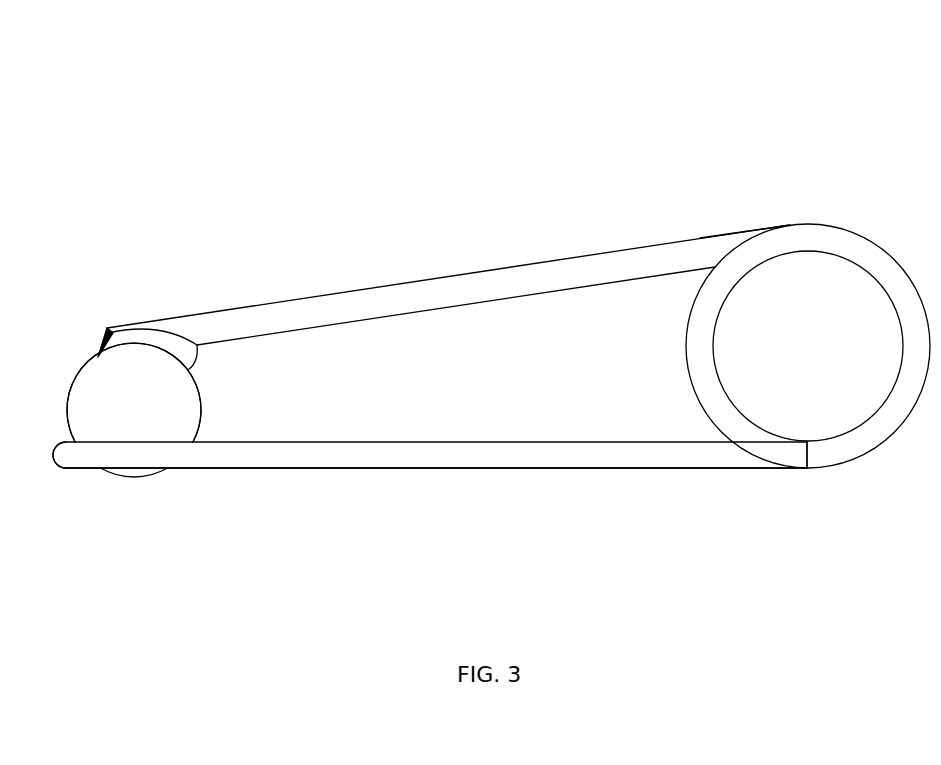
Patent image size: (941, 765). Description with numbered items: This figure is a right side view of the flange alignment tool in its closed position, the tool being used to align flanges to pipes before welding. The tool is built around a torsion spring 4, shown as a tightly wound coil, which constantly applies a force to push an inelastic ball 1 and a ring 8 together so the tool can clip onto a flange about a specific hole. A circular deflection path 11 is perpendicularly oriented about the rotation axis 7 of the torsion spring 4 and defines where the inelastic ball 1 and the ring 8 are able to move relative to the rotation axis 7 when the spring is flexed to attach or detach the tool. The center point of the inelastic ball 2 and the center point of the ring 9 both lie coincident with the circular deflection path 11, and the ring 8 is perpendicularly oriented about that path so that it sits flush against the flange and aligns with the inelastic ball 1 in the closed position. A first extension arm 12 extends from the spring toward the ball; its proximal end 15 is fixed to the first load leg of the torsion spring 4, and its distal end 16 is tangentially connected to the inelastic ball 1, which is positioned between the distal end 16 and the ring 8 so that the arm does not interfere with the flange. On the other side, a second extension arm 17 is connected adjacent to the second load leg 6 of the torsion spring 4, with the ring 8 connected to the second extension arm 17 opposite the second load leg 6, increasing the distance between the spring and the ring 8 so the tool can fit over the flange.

The circular deflection path 11 is at (203, 35).
The inelastic ball 1 is at (198, 398).
The center point of the inelastic ball 2 is at (133, 407).
The torsion spring 4 is at (873, 233).
The second load leg 6 is at (818, 467).
The rotation axis 7 is at (808, 347).
The ring 8 is at (180, 466).
The center point of the ring 9 is at (136, 453).
The first extension arm 12 is at (469, 278).
The proximal end 15 is at (743, 232).
The distal end 16 is at (114, 330).
The second extension arm 17 is at (493, 465).